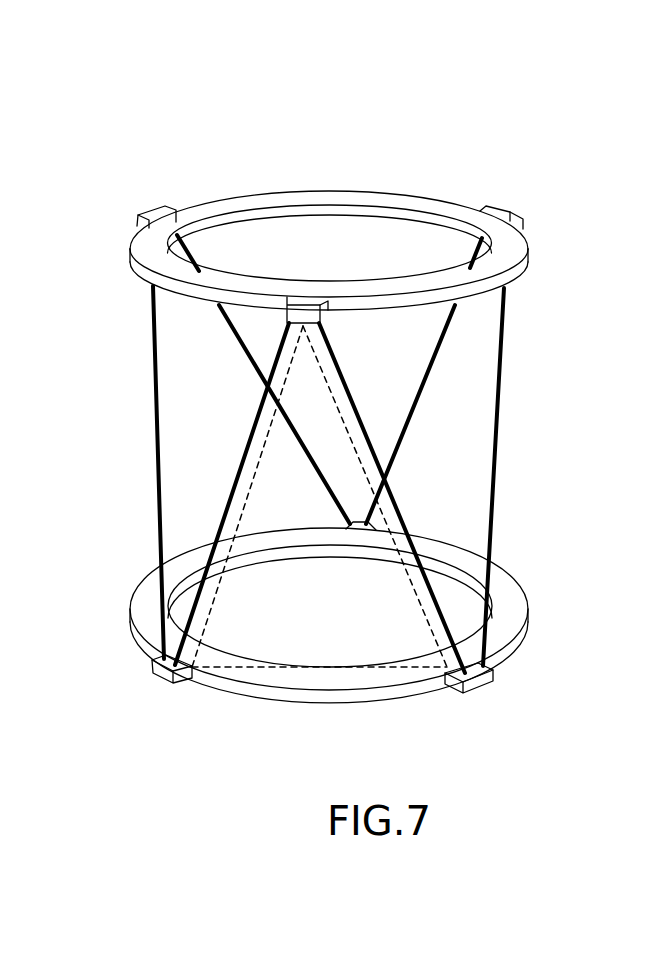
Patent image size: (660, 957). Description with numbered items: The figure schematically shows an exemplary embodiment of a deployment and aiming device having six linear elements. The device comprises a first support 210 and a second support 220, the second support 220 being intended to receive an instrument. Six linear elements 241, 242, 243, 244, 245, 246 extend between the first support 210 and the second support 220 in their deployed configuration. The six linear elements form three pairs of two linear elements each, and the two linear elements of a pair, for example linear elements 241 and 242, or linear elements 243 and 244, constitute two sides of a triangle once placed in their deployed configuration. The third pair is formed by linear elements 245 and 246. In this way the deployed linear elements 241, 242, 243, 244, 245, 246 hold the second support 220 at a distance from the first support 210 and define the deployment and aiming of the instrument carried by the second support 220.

The second support 220 is at (250, 194).
The first support 210 is at (228, 682).
The linear element 241 is at (224, 520).
The linear element 242 is at (434, 617).
The linear element 243 is at (495, 471).
The linear element 244 is at (445, 338).
The linear element 245 is at (270, 460).
The linear element 246 is at (153, 302).